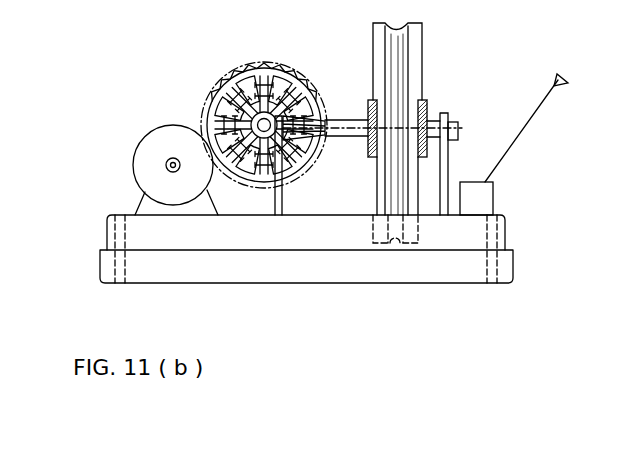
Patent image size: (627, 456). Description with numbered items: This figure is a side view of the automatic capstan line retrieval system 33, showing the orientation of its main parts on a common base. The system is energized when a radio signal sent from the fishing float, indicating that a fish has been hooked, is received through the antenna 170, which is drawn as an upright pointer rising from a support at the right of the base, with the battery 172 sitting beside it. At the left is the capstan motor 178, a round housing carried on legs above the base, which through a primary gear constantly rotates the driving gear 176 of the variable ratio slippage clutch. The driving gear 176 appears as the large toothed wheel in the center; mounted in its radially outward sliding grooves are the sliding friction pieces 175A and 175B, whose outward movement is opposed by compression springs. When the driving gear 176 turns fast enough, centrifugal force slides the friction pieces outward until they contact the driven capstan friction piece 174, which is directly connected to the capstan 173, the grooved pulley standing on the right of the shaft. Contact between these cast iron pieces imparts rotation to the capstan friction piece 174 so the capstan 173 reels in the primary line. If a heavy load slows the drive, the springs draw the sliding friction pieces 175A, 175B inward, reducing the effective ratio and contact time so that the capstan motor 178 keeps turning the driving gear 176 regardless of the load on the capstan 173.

The automatic capstan line retrieval system 33 is at (318, 340).
The antenna 170 is at (545, 103).
The battery 172 is at (486, 197).
The capstan 173 is at (402, 62).
The capstan friction piece 174 is at (324, 110).
The sliding friction piece 175A is at (216, 124).
The sliding friction piece 175B is at (242, 89).
The driving gear 176 is at (231, 75).
The capstan motor 178 is at (147, 147).